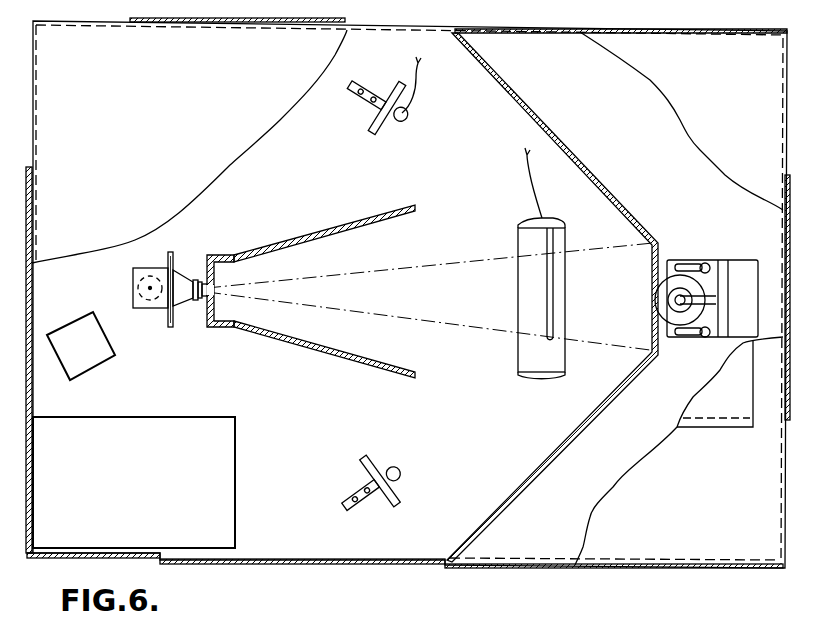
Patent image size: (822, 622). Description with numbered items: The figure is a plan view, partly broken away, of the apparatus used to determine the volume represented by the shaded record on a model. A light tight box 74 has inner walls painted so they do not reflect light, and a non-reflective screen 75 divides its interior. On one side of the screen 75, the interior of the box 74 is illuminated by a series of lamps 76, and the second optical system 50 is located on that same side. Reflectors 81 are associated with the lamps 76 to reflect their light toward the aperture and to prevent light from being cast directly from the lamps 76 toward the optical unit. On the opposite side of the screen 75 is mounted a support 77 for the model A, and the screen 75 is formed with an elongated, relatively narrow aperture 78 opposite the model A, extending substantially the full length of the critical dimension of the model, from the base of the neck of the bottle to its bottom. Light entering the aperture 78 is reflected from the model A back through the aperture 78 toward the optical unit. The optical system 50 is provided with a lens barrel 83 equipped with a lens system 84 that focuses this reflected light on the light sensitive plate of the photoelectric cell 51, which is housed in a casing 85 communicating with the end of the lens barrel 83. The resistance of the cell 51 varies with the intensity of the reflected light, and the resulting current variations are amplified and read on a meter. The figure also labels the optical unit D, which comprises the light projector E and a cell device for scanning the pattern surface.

The light tight box 74 is at (45, 557).
The screen 75 is at (497, 505).
The lamps 76 is at (383, 137).
The support 77 is at (730, 272).
The aperture 78 is at (656, 292).
The reflectors 81 is at (523, 350).
The lens barrel 83 is at (190, 305).
The lens system 84 is at (200, 279).
The casing 85 is at (133, 284).
The second optical system 50 is at (178, 309).
The light sensitive cell 51 is at (149, 275).
The optical unit D is at (185, 278).
The light projector E is at (153, 301).
The model A is at (660, 311).